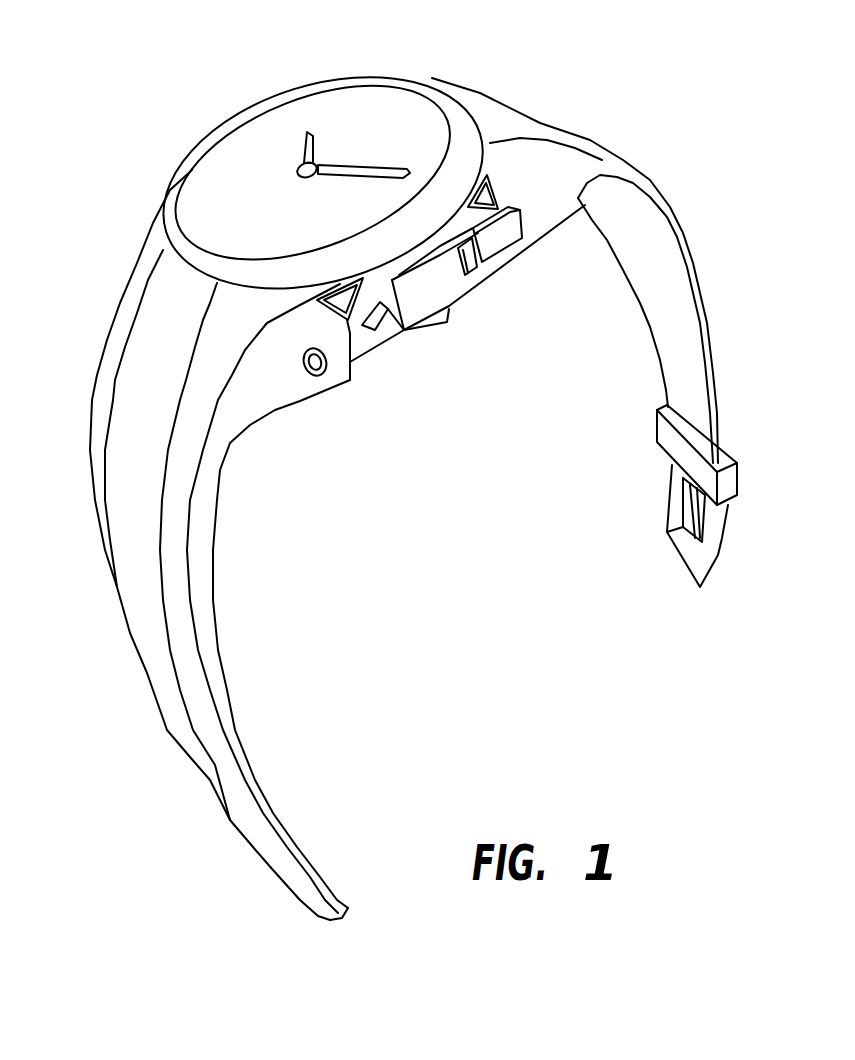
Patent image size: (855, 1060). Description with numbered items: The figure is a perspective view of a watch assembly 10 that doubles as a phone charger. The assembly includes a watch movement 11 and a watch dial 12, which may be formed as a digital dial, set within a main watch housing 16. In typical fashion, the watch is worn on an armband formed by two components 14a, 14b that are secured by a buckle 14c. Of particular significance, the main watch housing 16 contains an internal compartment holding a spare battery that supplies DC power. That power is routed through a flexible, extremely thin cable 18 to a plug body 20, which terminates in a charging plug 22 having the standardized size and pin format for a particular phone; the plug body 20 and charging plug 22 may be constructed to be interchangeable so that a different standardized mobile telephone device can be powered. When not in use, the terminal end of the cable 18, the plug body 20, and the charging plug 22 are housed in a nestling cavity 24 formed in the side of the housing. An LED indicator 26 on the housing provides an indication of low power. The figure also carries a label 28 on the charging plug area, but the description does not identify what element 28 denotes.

The watch assembly 10 is at (64, 258).
The watch movement 11 is at (165, 221).
The watch dial 12 is at (330, 112).
The armband component 14a is at (683, 352).
The armband component 14b is at (177, 703).
The buckle 14c is at (707, 565).
The main watch housing 16 is at (222, 314).
The cable 18 is at (365, 320).
The plug body 20 is at (413, 300).
The charging plug 22 is at (500, 236).
The nestling cavity 24 is at (380, 340).
The LED indicator 26 is at (313, 378).
The indicator 28 is at (470, 262).